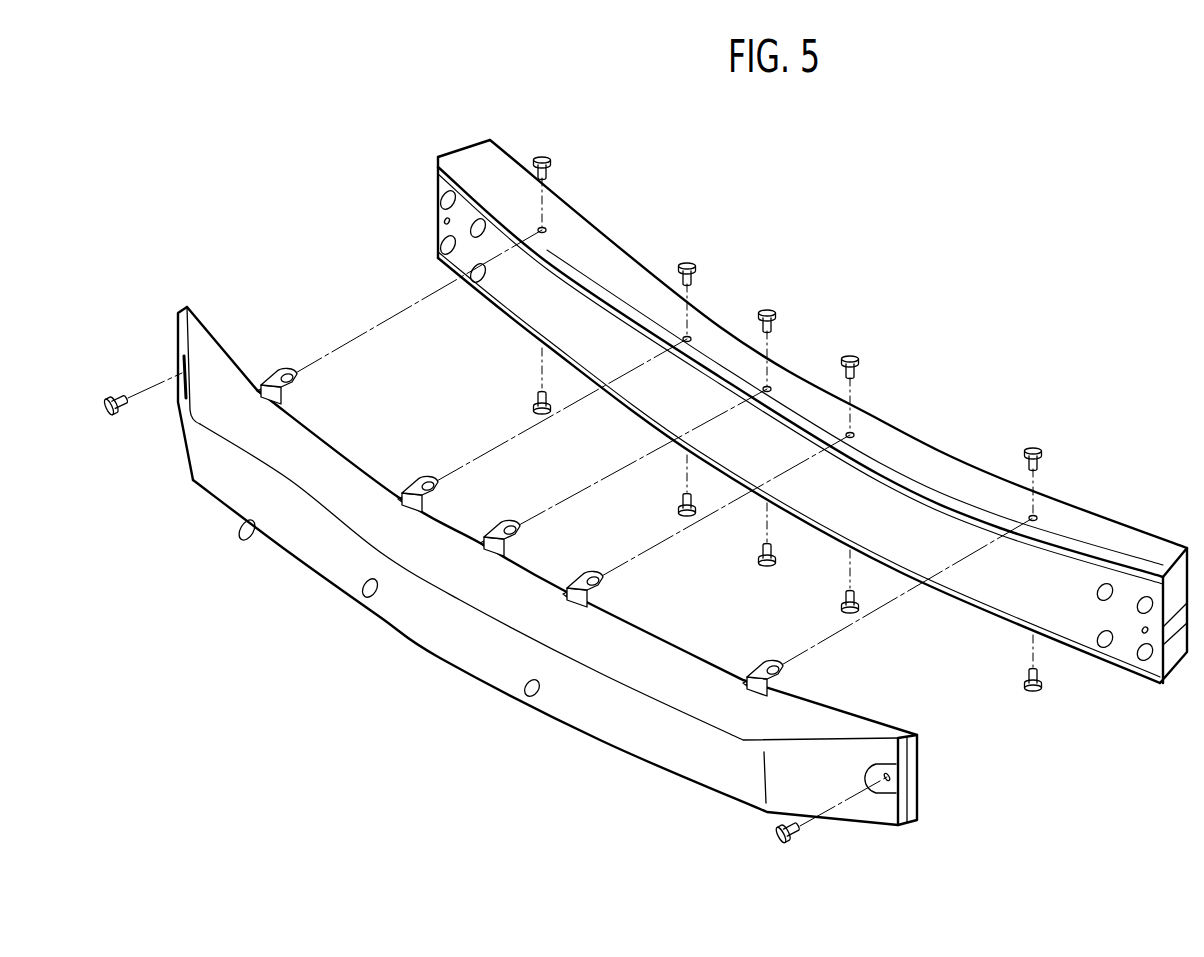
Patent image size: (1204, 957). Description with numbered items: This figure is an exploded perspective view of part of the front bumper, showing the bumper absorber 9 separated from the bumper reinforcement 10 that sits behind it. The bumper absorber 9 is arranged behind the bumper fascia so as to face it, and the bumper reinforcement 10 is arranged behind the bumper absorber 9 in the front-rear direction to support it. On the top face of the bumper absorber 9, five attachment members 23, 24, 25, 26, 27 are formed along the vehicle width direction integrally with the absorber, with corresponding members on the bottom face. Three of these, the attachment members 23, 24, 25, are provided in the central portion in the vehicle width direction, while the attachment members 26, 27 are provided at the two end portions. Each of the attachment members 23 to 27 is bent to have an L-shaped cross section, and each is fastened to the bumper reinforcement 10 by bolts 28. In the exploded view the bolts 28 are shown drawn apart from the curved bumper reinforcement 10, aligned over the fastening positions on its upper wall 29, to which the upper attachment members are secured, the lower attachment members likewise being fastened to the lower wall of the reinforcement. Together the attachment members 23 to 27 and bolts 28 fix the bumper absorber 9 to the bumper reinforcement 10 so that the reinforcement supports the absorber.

The bumper absorber 9 is at (443, 660).
The bumper reinforcement 10 is at (920, 442).
The attachment member 23 is at (417, 487).
The attachment member 24 is at (497, 530).
The attachment member 25 is at (580, 580).
The attachment member 26 is at (274, 378).
The attachment member 27 is at (763, 667).
The bolt 28 is at (1034, 446).
The upper wall 29 is at (1090, 525).